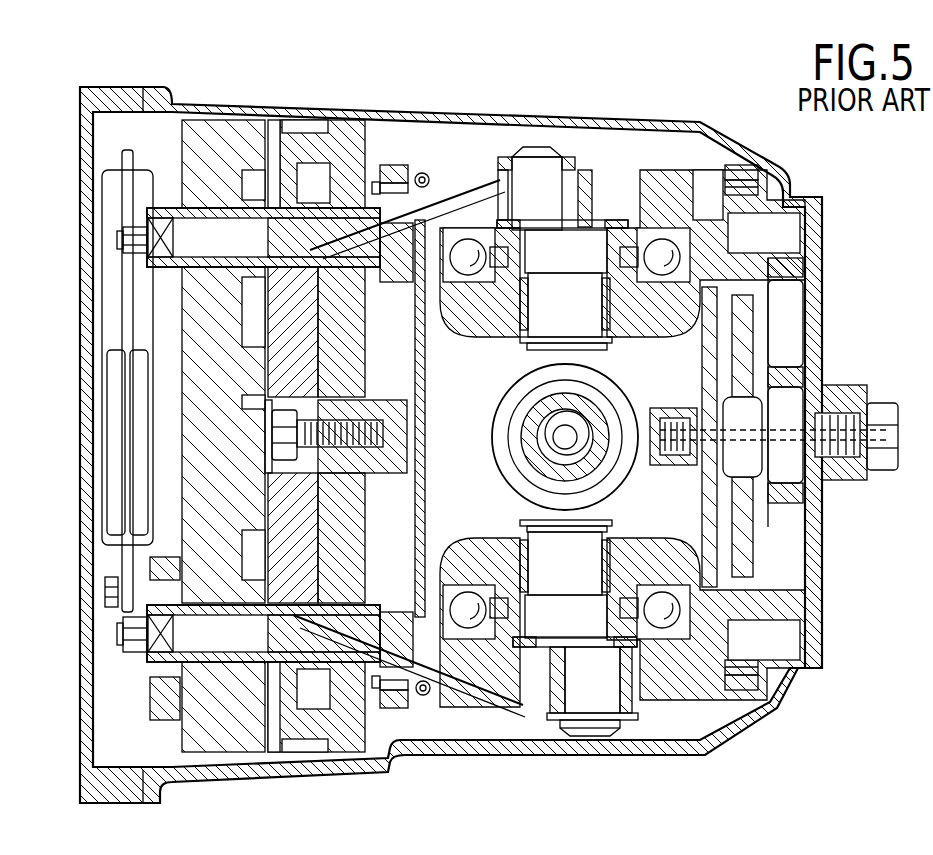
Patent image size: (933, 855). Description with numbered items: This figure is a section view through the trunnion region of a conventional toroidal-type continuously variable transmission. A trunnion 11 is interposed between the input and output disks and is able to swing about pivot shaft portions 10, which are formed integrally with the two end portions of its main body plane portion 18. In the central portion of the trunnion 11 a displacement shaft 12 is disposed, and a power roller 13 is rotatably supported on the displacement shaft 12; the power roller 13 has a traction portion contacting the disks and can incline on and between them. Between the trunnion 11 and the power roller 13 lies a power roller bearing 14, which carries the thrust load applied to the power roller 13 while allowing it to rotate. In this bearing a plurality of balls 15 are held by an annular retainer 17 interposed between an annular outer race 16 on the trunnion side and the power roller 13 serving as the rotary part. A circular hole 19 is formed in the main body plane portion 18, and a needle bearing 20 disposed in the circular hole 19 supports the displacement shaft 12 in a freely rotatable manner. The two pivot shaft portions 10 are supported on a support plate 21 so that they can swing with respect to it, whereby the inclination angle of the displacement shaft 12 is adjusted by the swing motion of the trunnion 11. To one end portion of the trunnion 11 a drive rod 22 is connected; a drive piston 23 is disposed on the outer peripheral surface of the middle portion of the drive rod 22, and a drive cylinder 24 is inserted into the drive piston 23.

The pivot shaft portion 10 is at (390, 166).
The trunnion 11 is at (708, 178).
The displacement shaft 12 is at (567, 262).
The power roller 13 is at (640, 332).
The power roller bearing 14 is at (678, 222).
The balls 15 is at (678, 297).
The annular outer race 16 is at (455, 220).
The annular retainer 17 is at (450, 264).
The main body plane portion 18 is at (628, 168).
The circular hole 19 is at (518, 160).
The needle bearing 20 is at (567, 172).
The support plate 21 is at (740, 525).
The drive rod 22 is at (215, 227).
The drive piston 23 is at (312, 135).
The drive cylinder 24 is at (262, 122).